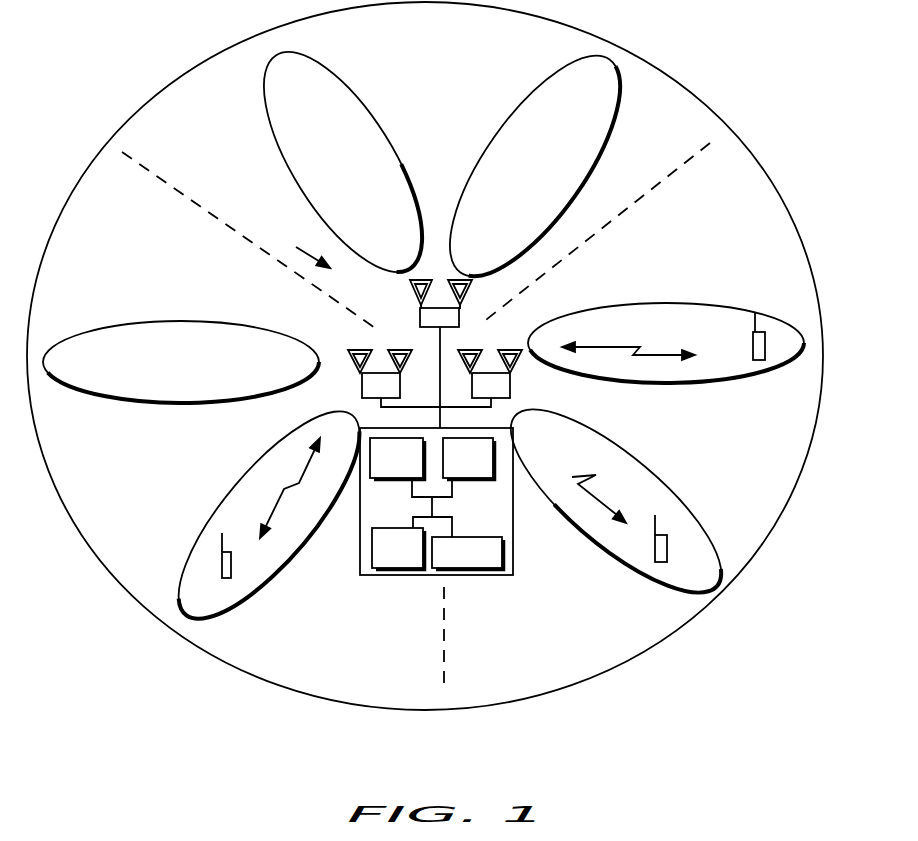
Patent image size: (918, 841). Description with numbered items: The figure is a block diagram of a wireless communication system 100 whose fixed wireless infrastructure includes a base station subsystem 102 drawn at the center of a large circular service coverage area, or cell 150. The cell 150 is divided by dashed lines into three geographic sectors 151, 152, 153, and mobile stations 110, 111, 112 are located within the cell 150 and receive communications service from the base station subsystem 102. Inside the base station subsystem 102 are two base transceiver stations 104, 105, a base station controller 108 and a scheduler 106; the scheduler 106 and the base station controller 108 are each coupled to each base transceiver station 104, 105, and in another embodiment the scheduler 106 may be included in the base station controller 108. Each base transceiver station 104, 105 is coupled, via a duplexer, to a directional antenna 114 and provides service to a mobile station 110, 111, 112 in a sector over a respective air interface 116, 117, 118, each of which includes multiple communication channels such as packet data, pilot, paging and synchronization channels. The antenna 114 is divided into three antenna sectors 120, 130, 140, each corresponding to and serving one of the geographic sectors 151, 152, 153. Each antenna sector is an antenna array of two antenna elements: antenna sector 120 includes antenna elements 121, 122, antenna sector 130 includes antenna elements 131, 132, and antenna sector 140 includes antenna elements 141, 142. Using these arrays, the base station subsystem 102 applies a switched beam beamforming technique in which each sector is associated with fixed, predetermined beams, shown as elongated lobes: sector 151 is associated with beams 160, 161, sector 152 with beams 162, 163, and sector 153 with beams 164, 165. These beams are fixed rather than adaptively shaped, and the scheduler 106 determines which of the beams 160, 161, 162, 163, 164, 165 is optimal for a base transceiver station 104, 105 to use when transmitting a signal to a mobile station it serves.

The wireless communication system 100 is at (235, 786).
The base station subsystem 102 is at (451, 514).
The base transceiver station 104 is at (405, 480).
The base transceiver station 105 is at (462, 480).
The scheduler 106 is at (462, 538).
The base station controller 108 is at (376, 529).
The mobile station 110 is at (753, 336).
The mobile station 111 is at (668, 550).
The mobile station 112 is at (222, 562).
The antenna 114 is at (301, 246).
The air interface 116 is at (596, 343).
The air interface 117 is at (600, 502).
The air interface 118 is at (287, 491).
The antenna sector 120 is at (515, 381).
The antenna element 121 is at (508, 390).
The antenna element 122 is at (472, 396).
The antenna sector 130 is at (374, 390).
The antenna element 131 is at (360, 395).
The antenna element 132 is at (402, 395).
The antenna sector 140 is at (432, 311).
The antenna element 141 is at (462, 310).
The antenna element 142 is at (416, 310).
The cell 150 is at (517, 655).
The geographic sector 151 is at (773, 465).
The geographic sector 152 is at (117, 475).
The geographic sector 153 is at (450, 58).
The beam 160 is at (666, 318).
The beam 161 is at (616, 501).
The beam 162 is at (269, 514).
The beam 163 is at (180, 322).
The beam 164 is at (386, 147).
The beam 165 is at (491, 147).